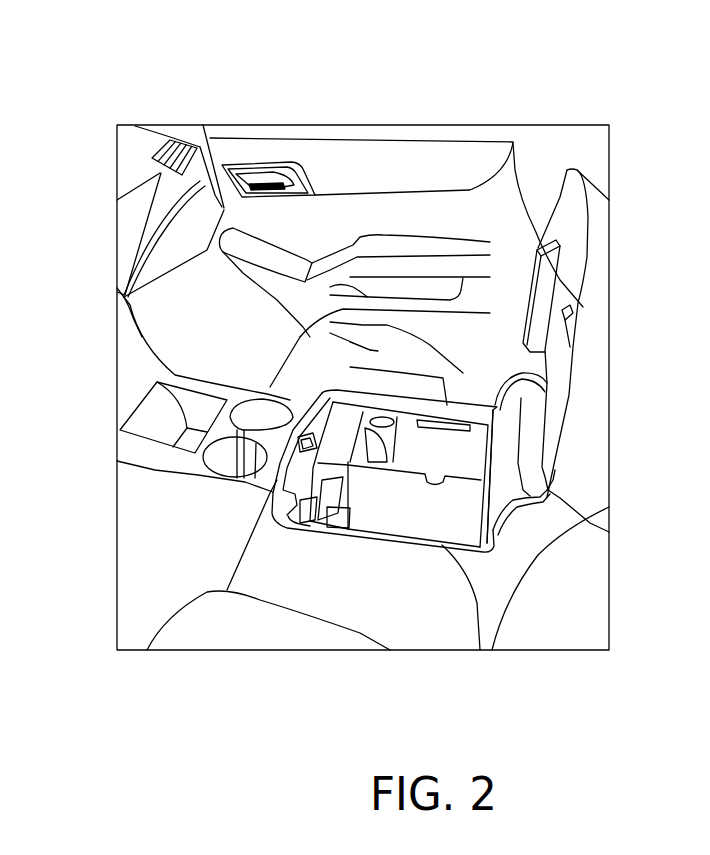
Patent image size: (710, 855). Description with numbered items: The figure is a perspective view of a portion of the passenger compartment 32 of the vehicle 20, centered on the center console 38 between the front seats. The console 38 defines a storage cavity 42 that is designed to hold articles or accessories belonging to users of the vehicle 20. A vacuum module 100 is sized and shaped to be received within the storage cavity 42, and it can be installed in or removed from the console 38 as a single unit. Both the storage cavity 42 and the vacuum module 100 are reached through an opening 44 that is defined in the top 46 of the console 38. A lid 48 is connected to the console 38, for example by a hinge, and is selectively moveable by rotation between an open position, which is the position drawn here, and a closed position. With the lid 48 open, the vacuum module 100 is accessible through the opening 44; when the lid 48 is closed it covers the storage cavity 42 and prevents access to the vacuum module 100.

The vehicle 20 is at (125, 86).
The passenger compartment 32 is at (245, 152).
The center console 38 is at (267, 537).
The storage cavity 42 is at (441, 514).
The opening 44 is at (394, 537).
The top 46 is at (480, 650).
The lid 48 is at (470, 372).
The vacuum module 100 is at (381, 400).